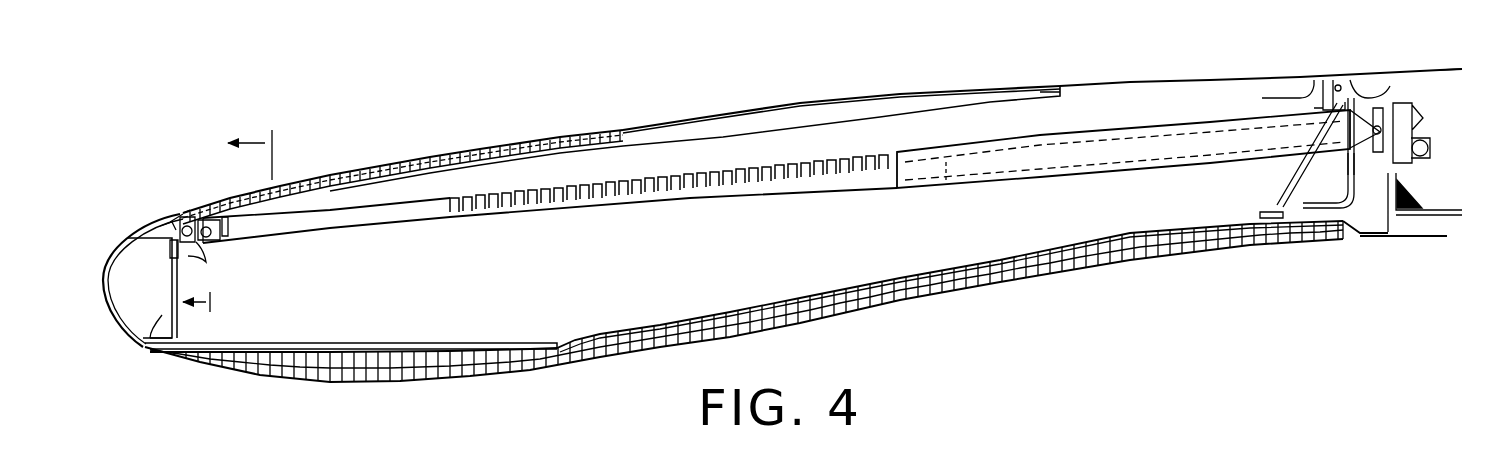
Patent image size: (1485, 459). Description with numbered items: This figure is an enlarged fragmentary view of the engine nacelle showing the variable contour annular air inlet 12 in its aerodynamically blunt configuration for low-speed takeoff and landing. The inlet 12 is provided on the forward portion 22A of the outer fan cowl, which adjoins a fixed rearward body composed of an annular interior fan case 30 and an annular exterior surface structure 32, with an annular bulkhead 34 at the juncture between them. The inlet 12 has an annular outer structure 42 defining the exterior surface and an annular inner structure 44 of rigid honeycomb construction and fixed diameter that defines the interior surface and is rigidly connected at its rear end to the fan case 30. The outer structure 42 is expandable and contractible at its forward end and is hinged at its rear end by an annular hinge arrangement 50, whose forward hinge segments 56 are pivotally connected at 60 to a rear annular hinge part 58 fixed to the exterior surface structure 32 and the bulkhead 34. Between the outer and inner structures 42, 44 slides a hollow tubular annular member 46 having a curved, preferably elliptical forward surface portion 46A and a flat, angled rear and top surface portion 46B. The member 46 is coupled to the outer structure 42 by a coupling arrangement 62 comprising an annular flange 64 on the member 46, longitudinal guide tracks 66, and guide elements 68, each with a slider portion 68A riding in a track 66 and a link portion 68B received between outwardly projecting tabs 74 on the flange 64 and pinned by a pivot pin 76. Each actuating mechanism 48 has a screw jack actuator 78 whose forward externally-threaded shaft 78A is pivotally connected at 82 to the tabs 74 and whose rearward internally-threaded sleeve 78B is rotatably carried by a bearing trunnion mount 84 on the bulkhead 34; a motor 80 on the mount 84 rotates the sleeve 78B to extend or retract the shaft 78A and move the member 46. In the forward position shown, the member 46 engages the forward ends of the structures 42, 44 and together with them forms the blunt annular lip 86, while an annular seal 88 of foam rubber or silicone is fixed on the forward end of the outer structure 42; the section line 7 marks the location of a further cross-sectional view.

The variable contour annular air inlet 12 is at (478, 110).
The forward portion of the annular outer fan cowl 22A is at (1108, 72).
The annular interior fan case 30 is at (1418, 240).
The annular exterior surface structure 32 is at (1440, 72).
The annular bulkhead 34 is at (1298, 190).
The annular outer structure 42 is at (696, 114).
The annular inner structure 44 is at (882, 306).
The annular member 46 is at (103, 322).
The forward surface portion 46A is at (112, 258).
The rear and top surface portion 46B is at (152, 335).
The actuating mechanism 48 is at (733, 222).
The annular hinge arrangement 50 is at (1340, 75).
The forward hinge segment 56 is at (1292, 98).
The rear annular hinge part 58 is at (1368, 92).
The pivotal connection 60 is at (1330, 80).
The coupling arrangement 62 is at (190, 198).
The annular flange 64 is at (194, 252).
The longitudinal guide track 66 is at (362, 170).
The guide element 68 is at (188, 198).
The slider portion 68A is at (208, 212).
The link portion 68B is at (181, 248).
The outwardly projecting tabs 74 is at (206, 248).
The pivot pin 76 is at (172, 222).
The screw jack actuator 78 is at (896, 196).
The forward externally-threaded shaft 78A is at (473, 216).
The rearward internally-threaded sleeve 78B is at (1110, 182).
The motor 80 is at (1427, 137).
The pivotal connection of forward shaft 82 is at (214, 240).
The bearing trunnion mount 84 is at (1363, 125).
The annular lip 86 is at (155, 360).
The annular seal 88 is at (165, 226).
The section line 7- 7 is at (227, 235).